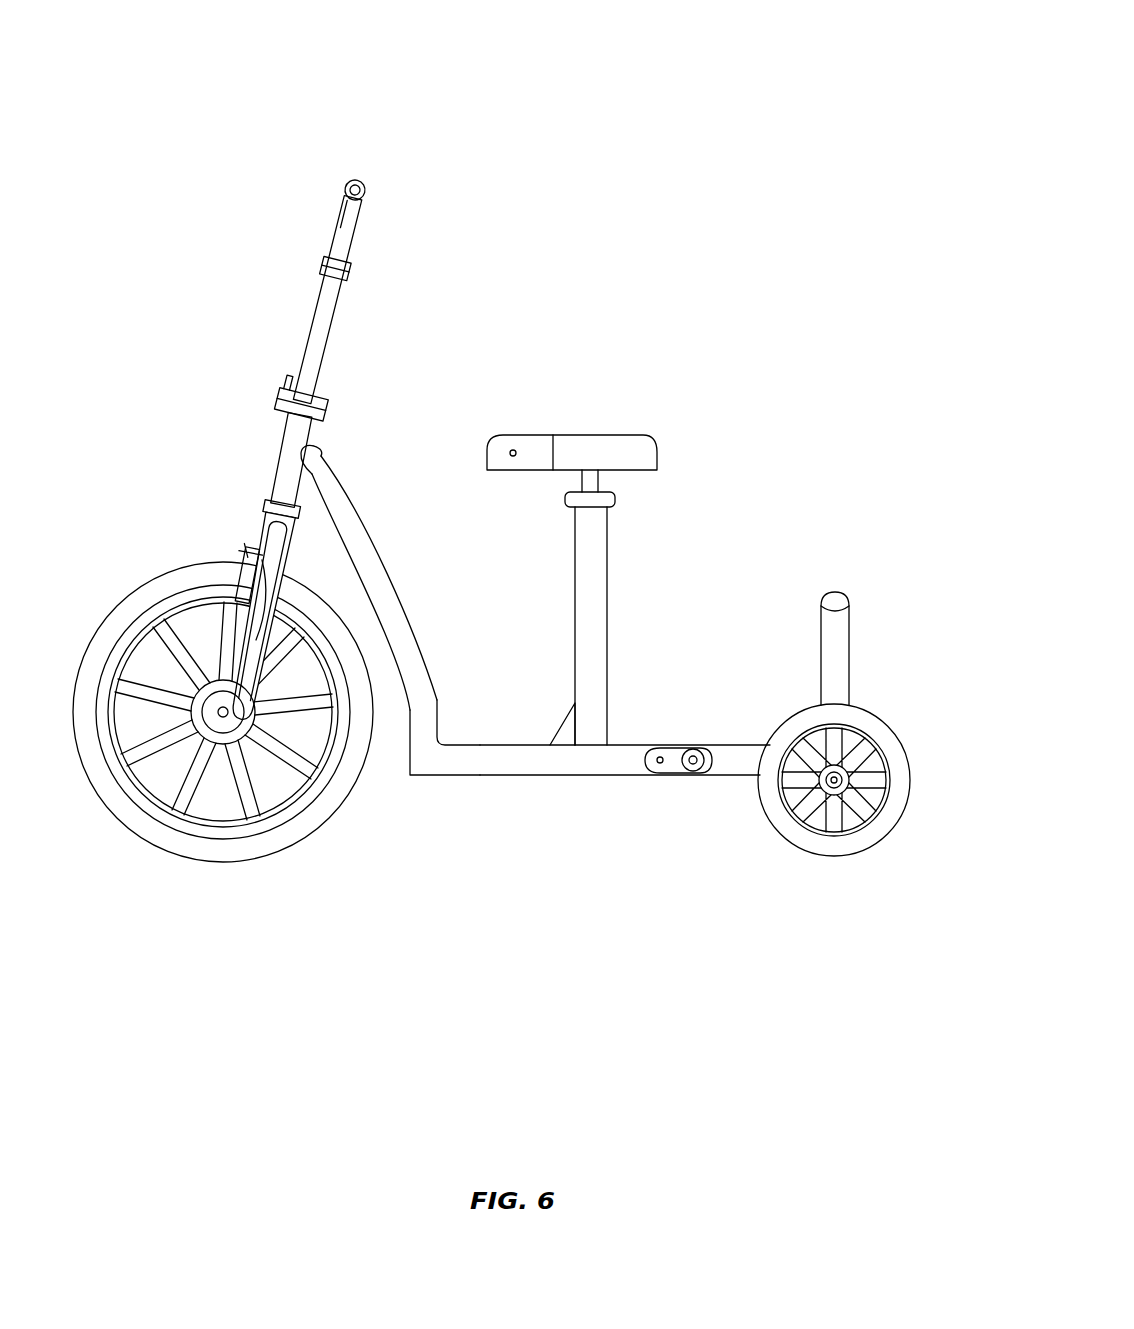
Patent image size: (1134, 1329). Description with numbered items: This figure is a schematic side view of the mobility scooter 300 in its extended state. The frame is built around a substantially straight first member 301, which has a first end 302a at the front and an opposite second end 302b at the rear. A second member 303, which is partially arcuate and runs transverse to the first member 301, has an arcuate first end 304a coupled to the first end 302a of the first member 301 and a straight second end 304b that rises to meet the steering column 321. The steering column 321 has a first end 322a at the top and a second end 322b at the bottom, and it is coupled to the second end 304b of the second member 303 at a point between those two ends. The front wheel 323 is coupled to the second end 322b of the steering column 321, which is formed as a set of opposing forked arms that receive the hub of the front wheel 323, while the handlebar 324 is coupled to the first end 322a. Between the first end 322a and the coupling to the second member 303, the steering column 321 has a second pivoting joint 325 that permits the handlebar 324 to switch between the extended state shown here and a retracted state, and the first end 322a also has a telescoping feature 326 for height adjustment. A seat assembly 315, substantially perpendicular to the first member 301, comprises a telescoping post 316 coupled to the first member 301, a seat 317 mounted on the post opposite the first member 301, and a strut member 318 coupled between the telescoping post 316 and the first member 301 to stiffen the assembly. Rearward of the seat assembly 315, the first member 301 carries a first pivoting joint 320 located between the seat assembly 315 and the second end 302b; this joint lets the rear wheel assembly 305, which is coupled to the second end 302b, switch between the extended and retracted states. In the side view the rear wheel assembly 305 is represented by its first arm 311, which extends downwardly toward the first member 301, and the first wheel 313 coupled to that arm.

The mobility scooter 300 is at (724, 152).
The first member 301 is at (570, 774).
The first end of the first member 302a is at (428, 775).
The second end of the first member 302b is at (821, 838).
The second member 303 is at (358, 523).
The first end of the second member 304a is at (430, 724).
The second end of the second member 304b is at (317, 445).
The rear wheel assembly 305 is at (848, 566).
The first arm 311 is at (837, 677).
The first wheel 313 is at (901, 804).
The seat assembly 315 is at (604, 429).
The telescoping post 316 is at (601, 637).
The seat 317 is at (652, 445).
The strut member 318 is at (567, 735).
The first pivoting joint 320 is at (673, 753).
The steering column 321 is at (260, 336).
The first end of the steering column 322a is at (346, 193).
The second end of the steering column 322b is at (240, 590).
The front wheel 323 is at (215, 843).
The handlebar 324 is at (362, 185).
The second pivoting joint 325 is at (334, 330).
The telescoping feature 326 is at (330, 260).